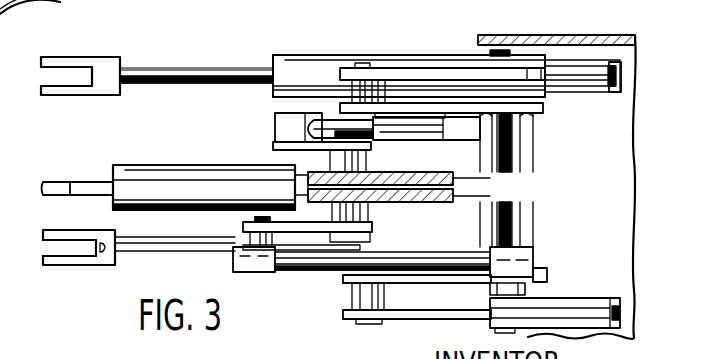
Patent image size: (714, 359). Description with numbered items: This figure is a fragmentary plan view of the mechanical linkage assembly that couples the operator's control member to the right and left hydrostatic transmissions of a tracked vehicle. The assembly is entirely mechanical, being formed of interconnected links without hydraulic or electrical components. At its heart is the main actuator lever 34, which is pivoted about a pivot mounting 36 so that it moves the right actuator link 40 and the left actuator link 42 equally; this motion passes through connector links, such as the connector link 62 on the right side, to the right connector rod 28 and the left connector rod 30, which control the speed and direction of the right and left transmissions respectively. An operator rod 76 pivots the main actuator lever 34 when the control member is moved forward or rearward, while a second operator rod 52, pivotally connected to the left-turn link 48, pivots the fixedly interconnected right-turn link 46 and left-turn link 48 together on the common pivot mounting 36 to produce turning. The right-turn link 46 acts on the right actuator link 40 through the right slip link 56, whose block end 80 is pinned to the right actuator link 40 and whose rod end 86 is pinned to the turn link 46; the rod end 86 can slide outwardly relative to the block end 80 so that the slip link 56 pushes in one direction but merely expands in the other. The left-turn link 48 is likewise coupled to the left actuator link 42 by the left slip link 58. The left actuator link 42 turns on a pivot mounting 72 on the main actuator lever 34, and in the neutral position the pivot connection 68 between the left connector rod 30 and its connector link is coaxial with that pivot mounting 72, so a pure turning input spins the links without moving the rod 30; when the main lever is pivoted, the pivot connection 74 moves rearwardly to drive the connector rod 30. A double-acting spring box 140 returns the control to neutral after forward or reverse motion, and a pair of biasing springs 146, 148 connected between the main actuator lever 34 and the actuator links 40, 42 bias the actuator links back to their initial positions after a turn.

The double-acting spring box 140 is at (336, 58).
The right actuator link 40 is at (392, 100).
The connector link 62 is at (430, 72).
The right connector rod 28 is at (606, 90).
The left connector rod 30 is at (634, 292).
The right slip link 56 is at (272, 122).
The right-turn link 46 is at (274, 146).
The rod end 86 is at (372, 138).
The block end 80 is at (440, 140).
The operator rod 76 is at (122, 166).
The main actuator lever 34 is at (530, 181).
The pivot mounting 36 is at (362, 212).
The left-turn link 48 is at (250, 220).
The operator rod 52 is at (214, 252).
The left slip link 58 is at (326, 270).
The pivot connection 74 is at (356, 322).
The pivot mounting 72 is at (495, 293).
The pivot connection 68 is at (525, 330).
The left actuator link 42 is at (540, 275).
The biasing spring 146 is at (536, 132).
The biasing spring 148 is at (536, 232).